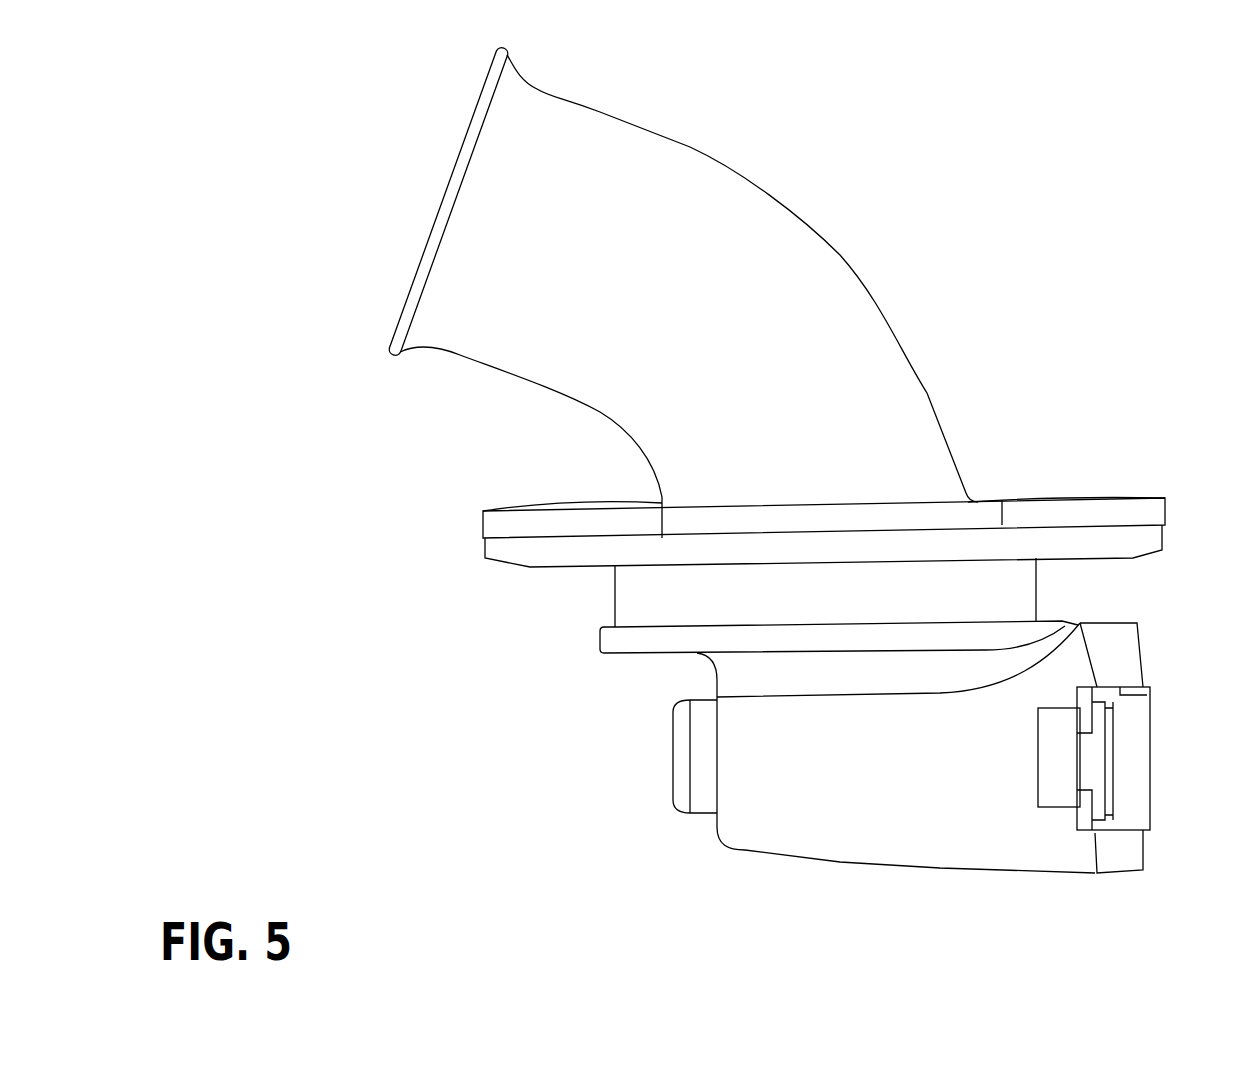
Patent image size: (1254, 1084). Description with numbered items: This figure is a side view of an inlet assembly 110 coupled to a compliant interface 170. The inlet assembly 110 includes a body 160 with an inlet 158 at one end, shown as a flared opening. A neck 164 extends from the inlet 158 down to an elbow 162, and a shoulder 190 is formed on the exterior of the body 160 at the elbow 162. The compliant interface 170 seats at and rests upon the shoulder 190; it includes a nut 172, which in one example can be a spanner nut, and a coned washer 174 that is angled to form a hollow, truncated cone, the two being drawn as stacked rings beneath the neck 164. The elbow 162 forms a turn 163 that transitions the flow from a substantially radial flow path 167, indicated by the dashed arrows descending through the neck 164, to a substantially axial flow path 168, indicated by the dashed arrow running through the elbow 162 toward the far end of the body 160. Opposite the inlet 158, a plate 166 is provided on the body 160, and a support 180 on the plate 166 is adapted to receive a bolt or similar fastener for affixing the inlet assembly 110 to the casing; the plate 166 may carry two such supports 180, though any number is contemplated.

The inlet assembly 110 is at (1241, 66).
The inlet 158 is at (428, 192).
The body 160 is at (870, 392).
The elbow 162 is at (760, 668).
The turn 163 is at (990, 633).
The neck 164 is at (678, 192).
The plate 166 is at (1130, 750).
The radial flow path 167 is at (825, 600).
The axial flow path 168 is at (1004, 753).
The compliant interface 170 is at (1085, 497).
The nut 172 is at (507, 526).
The coned washer 174 is at (583, 548).
The support 180 is at (1070, 767).
The shoulder 190 is at (603, 637).